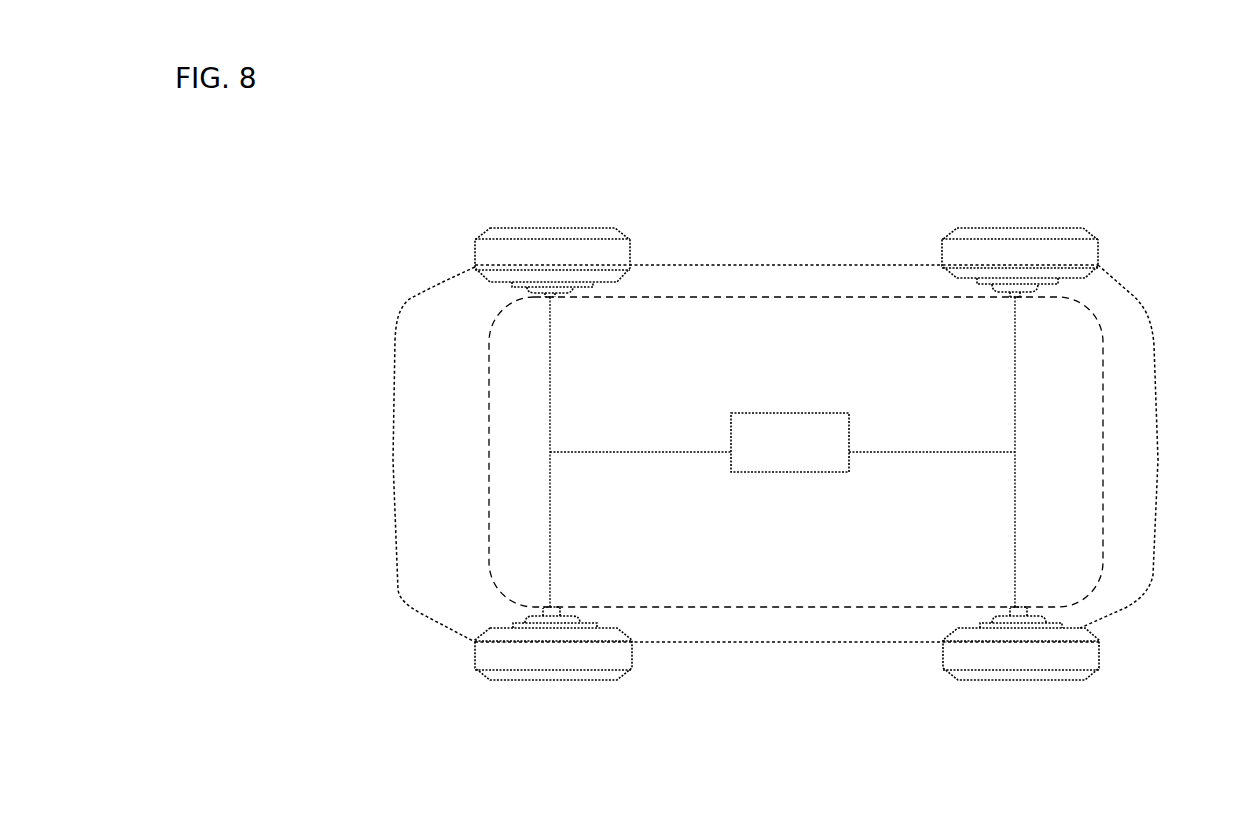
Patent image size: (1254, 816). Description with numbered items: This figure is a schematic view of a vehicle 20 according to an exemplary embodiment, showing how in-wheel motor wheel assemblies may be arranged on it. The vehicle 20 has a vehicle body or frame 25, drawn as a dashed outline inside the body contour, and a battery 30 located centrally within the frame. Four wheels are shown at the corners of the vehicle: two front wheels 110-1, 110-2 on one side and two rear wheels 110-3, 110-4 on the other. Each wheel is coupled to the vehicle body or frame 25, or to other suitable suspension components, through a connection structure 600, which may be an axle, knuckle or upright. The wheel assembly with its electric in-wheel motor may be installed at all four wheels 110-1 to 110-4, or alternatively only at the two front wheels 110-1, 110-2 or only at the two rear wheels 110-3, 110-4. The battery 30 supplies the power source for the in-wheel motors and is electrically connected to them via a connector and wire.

The vehicle 20 is at (362, 457).
The vehicle body or frame 25 is at (490, 428).
The battery 30 is at (849, 443).
The front wheel 110-1 is at (630, 258).
The front wheel 110-2 is at (475, 652).
The rear wheel 110-3 is at (1098, 247).
The rear wheel 110-4 is at (943, 652).
The connection structure 600 is at (551, 298).